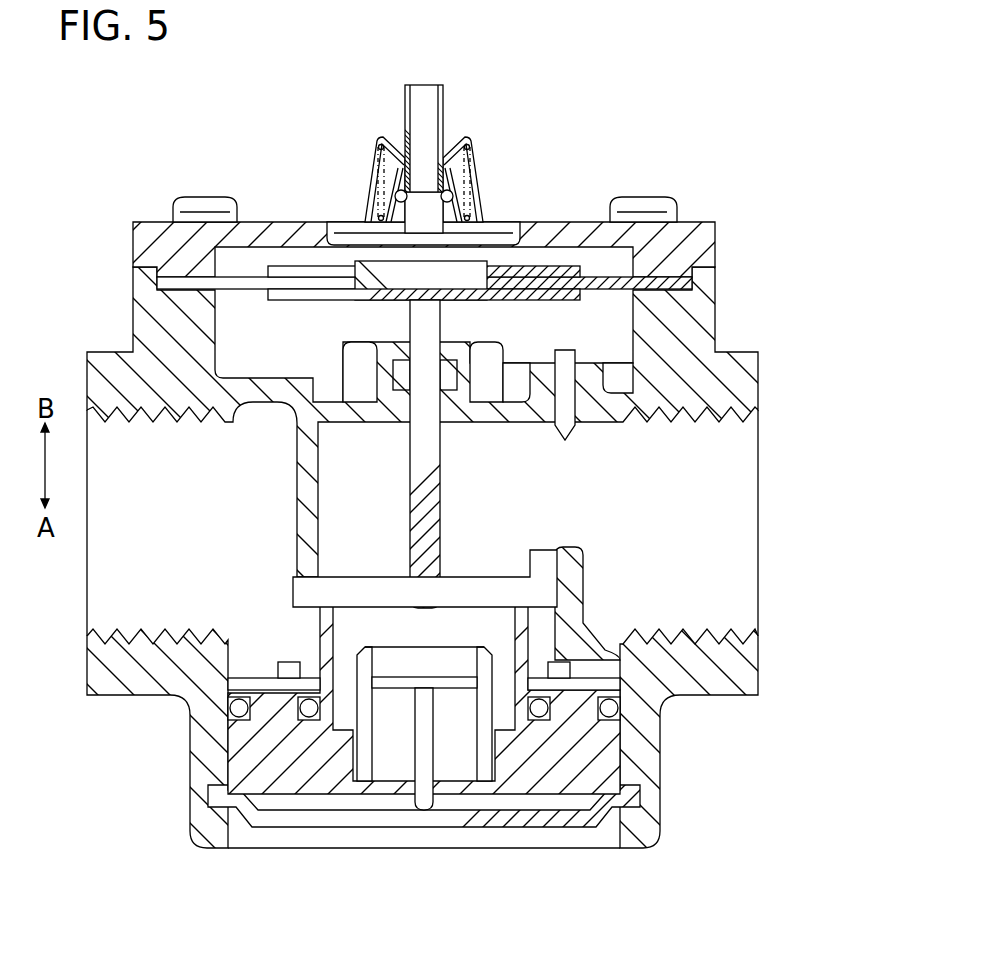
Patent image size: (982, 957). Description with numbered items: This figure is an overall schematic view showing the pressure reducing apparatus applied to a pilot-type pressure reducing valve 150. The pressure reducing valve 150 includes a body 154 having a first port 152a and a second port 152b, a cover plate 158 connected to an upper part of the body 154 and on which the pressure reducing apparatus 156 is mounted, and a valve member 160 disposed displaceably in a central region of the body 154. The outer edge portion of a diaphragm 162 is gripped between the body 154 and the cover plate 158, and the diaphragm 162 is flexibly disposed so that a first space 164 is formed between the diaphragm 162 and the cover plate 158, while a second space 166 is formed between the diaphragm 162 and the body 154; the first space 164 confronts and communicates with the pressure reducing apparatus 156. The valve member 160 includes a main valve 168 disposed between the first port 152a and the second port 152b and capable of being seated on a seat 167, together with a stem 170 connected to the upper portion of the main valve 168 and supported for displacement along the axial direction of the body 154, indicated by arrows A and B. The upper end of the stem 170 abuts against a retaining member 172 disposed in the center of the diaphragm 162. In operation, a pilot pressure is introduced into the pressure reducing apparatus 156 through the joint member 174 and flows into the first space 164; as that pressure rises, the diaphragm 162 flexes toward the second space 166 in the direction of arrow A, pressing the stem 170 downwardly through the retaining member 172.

The pilot-type pressure reducing valve 150 is at (700, 58).
The first port 152a is at (137, 637).
The second port 152b is at (735, 640).
The body 154 is at (836, 365).
The pressure reducing apparatus 156 is at (467, 122).
The cover plate 158 is at (296, 219).
The valve member 160 is at (500, 523).
The diaphragm 162 is at (236, 286).
The first space 164 is at (575, 257).
The second space 166 is at (617, 333).
The seat 167 is at (302, 606).
The main valve 168 is at (351, 577).
The stem 170 is at (416, 458).
The retaining member 172 is at (445, 300).
The joint member 174 is at (405, 100).